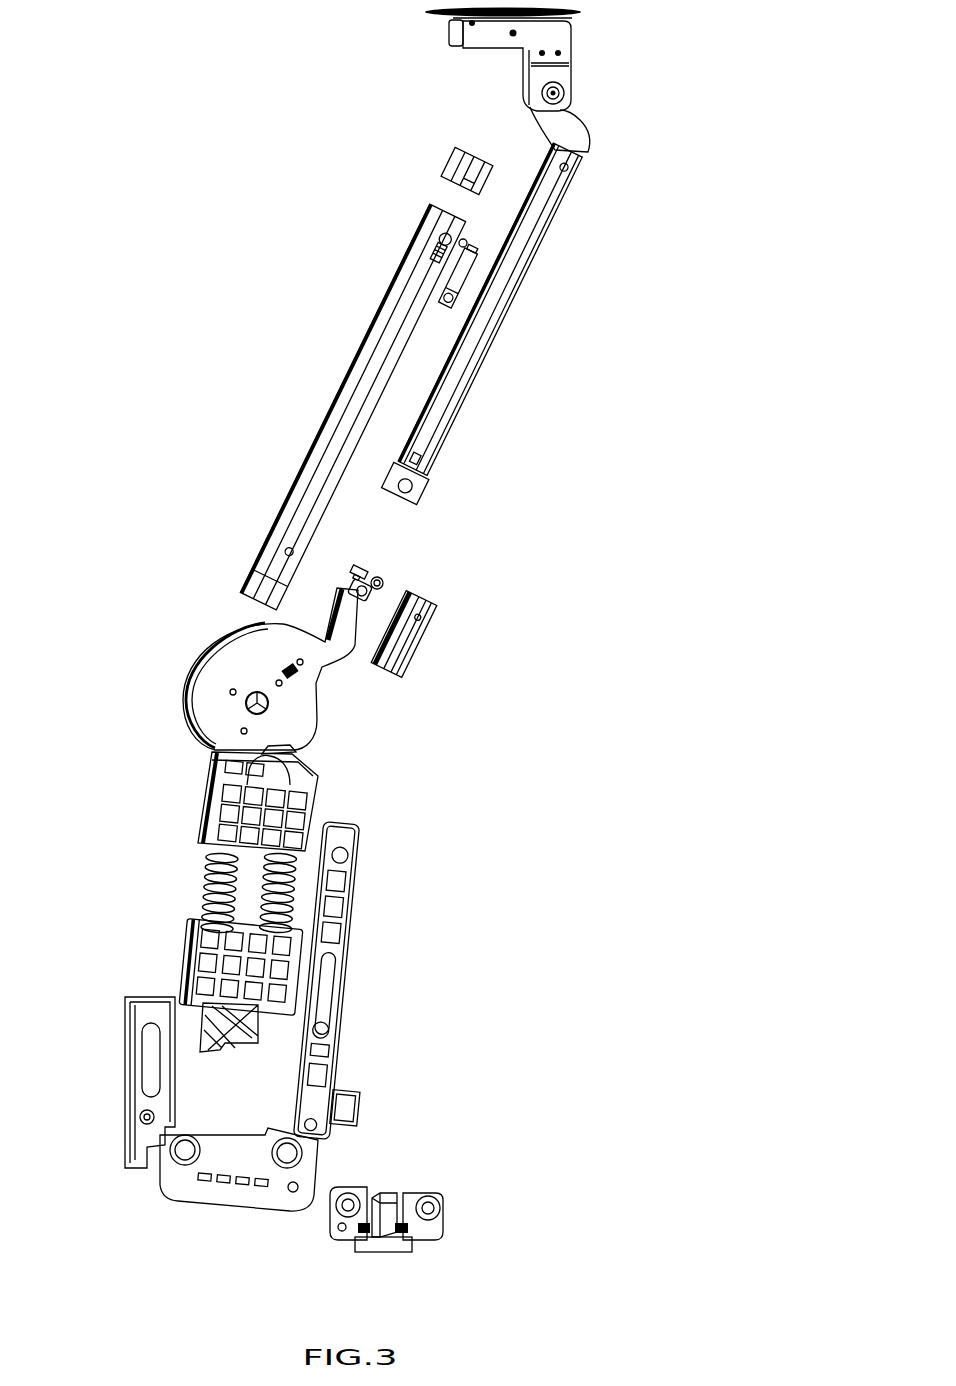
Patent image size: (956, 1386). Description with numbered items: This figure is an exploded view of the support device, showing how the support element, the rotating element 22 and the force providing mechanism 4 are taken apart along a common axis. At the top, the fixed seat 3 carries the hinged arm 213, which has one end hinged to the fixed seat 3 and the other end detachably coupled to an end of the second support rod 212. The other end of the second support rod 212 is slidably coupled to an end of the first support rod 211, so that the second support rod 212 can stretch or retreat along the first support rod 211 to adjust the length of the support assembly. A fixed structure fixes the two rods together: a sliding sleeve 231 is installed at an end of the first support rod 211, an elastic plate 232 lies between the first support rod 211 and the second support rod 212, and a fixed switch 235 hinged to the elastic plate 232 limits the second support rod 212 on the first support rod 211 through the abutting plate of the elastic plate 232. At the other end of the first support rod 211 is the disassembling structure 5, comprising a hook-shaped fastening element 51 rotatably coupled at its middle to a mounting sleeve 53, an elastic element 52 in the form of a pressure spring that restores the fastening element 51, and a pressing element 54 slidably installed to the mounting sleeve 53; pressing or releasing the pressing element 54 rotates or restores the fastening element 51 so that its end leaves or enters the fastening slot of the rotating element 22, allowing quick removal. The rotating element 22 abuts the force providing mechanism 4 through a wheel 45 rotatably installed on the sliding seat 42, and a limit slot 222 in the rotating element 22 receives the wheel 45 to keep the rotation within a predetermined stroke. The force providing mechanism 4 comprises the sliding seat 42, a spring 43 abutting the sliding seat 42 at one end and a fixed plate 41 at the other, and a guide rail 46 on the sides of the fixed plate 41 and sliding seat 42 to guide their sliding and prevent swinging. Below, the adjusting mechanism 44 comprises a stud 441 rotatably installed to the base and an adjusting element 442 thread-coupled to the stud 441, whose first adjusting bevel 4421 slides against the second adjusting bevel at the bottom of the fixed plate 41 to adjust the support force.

The fixed seat 3 is at (440, 36).
The first support rod 211 is at (397, 338).
The second support rod 212 is at (553, 224).
The hinged arm 213 is at (570, 124).
The rotating element 22 is at (243, 672).
The limit slot 222 is at (297, 748).
The sliding sleeve 231 is at (460, 165).
The elastic plate 232 is at (440, 238).
The fixed switch 235 is at (452, 285).
The force providing mechanism 4 is at (334, 1002).
The fixed plate 41 is at (275, 978).
The sliding seat 42 is at (300, 817).
The spring 43 is at (290, 895).
The adjusting mechanism 44 is at (464, 1175).
The stud 441 is at (440, 1208).
The adjusting element 442 is at (442, 1175).
The first adjusting bevel 4421 is at (380, 1200).
The wheel 45 is at (290, 756).
The guide rail 46 is at (340, 1057).
The disassembling structure 5 is at (480, 579).
The fastening element 51 is at (371, 597).
The elastic element 52 is at (364, 571).
The mounting sleeve 53 is at (408, 645).
The pressing element 54 is at (383, 580).